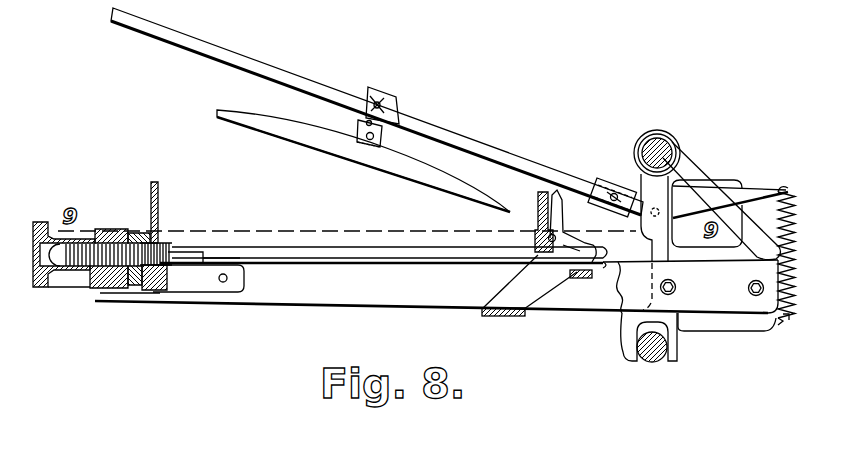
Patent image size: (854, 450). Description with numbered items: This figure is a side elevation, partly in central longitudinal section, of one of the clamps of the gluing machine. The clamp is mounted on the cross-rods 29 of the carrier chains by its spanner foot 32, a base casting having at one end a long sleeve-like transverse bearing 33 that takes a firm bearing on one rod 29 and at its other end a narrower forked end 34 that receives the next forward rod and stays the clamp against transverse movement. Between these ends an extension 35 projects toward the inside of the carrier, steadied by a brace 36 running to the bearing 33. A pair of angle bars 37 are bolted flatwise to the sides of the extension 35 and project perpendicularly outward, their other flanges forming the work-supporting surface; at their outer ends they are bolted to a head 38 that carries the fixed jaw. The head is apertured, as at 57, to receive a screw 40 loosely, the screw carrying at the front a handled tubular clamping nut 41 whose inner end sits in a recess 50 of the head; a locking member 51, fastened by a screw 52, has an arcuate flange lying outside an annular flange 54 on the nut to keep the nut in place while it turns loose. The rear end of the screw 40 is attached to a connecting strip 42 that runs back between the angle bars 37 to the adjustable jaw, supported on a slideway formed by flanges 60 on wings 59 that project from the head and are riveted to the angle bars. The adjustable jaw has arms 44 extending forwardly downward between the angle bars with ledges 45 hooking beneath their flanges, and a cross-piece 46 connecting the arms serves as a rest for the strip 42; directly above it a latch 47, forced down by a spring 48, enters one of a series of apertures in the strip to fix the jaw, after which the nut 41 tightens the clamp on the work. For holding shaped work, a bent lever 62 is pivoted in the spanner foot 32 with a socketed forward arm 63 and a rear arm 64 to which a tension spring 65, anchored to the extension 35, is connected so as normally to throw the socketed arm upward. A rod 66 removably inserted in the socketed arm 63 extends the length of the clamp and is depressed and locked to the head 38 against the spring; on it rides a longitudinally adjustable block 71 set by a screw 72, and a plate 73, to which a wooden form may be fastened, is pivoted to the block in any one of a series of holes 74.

The cross-rod 29 is at (656, 362).
The spanner foot 32 is at (702, 329).
The transverse bearing 33 is at (650, 136).
The forked end 34 is at (630, 362).
The extension 35 is at (750, 255).
The brace 36 is at (716, 196).
The angle bars 37 is at (436, 286).
The head 38 is at (149, 281).
The screw 40 is at (170, 247).
The clamping nut 41 is at (83, 275).
The connecting strip 42 is at (278, 258).
The arms 44 is at (535, 291).
The ledges 45 is at (502, 317).
The cross-piece 46 is at (578, 279).
The latch 47 is at (573, 252).
The spring 48 is at (545, 208).
The recess 50 is at (150, 195).
The locking member 51 is at (91, 289).
The screw 52 is at (118, 291).
The annular flange 54 is at (103, 237).
The aperture 57 is at (158, 245).
The wings 59 is at (208, 291).
The flanges 60 is at (225, 265).
The bent lever 62 is at (690, 204).
The socketed forward arm 63 is at (608, 176).
The rear arm 64 is at (757, 186).
The tension spring 65 is at (790, 190).
The rod 66 is at (477, 137).
The adjustable block 71 is at (395, 99).
The screw 72 is at (382, 99).
The plate 73 is at (300, 143).
The holes 74 is at (360, 118).